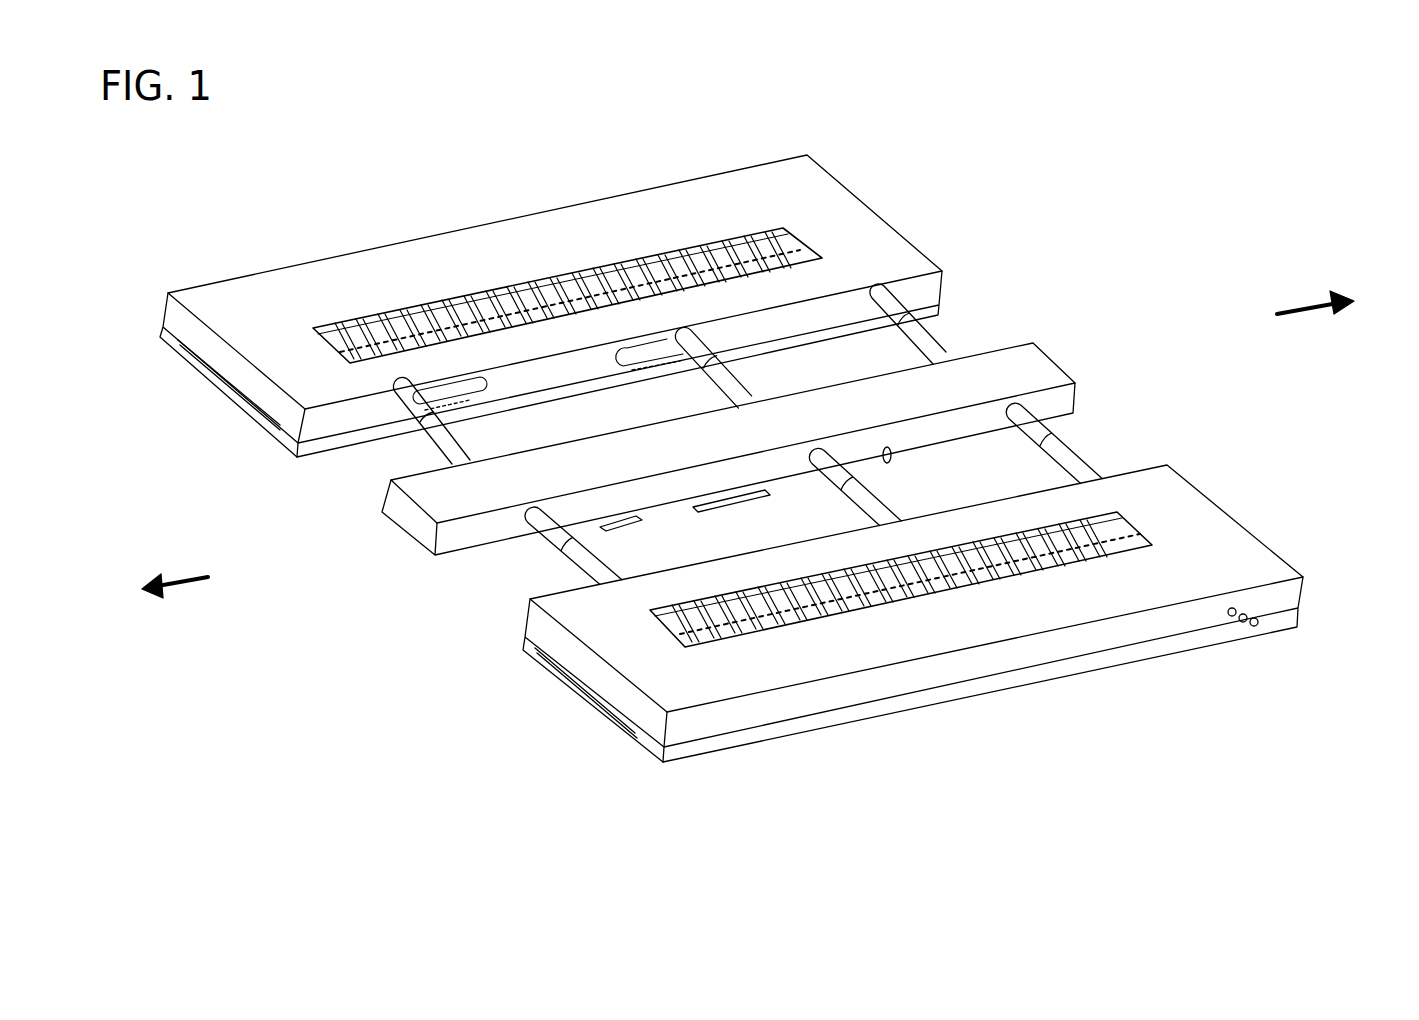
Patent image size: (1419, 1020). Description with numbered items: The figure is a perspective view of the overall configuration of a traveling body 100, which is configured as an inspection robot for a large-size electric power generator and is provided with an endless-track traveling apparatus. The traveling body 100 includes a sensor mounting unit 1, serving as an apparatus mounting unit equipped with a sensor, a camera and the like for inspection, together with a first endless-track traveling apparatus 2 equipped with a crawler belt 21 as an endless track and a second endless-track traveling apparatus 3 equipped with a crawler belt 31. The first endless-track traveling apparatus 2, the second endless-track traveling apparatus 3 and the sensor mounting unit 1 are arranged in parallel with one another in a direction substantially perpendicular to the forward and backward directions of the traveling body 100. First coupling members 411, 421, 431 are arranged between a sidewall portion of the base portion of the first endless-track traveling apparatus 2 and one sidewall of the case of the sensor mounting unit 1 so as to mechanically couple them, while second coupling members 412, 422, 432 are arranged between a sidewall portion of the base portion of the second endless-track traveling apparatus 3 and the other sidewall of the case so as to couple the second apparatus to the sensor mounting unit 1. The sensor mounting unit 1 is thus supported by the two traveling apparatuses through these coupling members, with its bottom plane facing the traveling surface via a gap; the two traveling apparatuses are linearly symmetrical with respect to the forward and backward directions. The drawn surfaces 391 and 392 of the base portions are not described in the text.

The traveling body 100 is at (1067, 170).
The sensor mounting unit 1 is at (997, 373).
The first endless-track traveling apparatus 2 is at (437, 260).
The second endless-track traveling apparatus 3 is at (1180, 530).
The crawler belt 21 is at (620, 268).
The crawler belt 31 is at (900, 570).
The first mounting surface 391 is at (818, 197).
The second mounting surface 392 is at (1250, 558).
The first coupling member 411 is at (405, 415).
The second coupling member 412 is at (550, 542).
The first coupling member 421 is at (720, 385).
The second coupling member 422 is at (843, 480).
The first coupling member 431 is at (942, 338).
The second coupling member 432 is at (1080, 462).